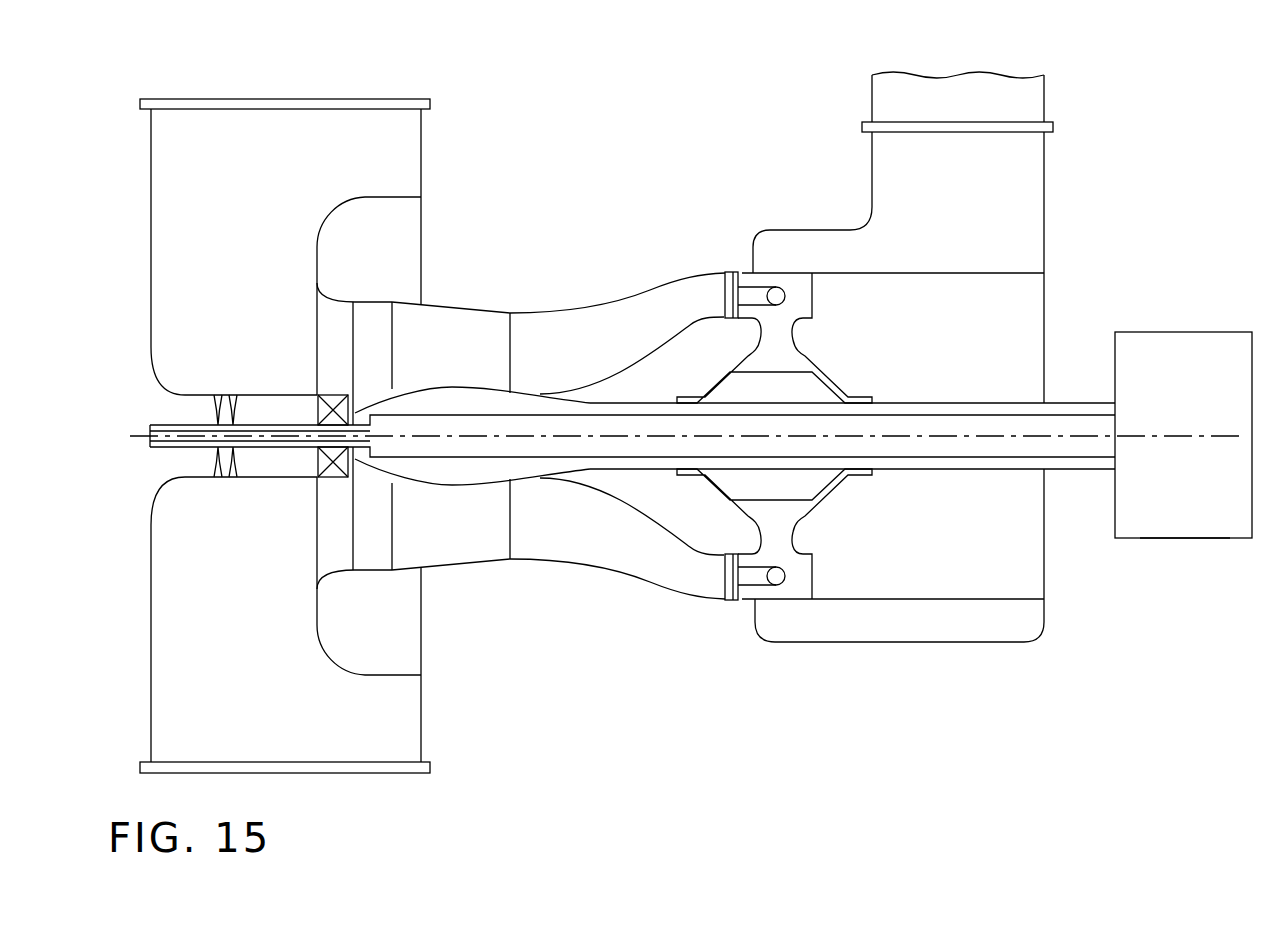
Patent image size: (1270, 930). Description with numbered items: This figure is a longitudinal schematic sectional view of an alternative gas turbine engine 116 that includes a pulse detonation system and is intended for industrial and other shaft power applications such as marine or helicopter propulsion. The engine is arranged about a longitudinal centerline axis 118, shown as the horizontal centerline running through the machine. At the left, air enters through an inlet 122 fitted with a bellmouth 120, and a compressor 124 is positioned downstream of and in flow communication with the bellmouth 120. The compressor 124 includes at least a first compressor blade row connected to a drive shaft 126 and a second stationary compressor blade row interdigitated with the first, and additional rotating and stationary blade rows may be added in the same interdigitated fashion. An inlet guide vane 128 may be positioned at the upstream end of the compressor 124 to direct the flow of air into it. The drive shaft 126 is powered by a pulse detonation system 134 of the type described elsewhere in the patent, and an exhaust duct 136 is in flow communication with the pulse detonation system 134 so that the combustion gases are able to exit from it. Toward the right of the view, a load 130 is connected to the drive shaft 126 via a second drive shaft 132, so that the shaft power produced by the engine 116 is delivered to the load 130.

The gas turbine engine 116 is at (204, 58).
The longitudinal centerline axis 118 is at (1128, 435).
The bellmouth 120 is at (340, 207).
The inlet 122 is at (252, 271).
The compressor 124 is at (470, 318).
The drive shaft 126 is at (482, 400).
The inlet guide vane 128 is at (330, 350).
The load 130 is at (1185, 540).
The second drive shaft 132 is at (998, 408).
The pulse detonation system 134 is at (780, 252).
The exhaust duct 136 is at (1044, 213).